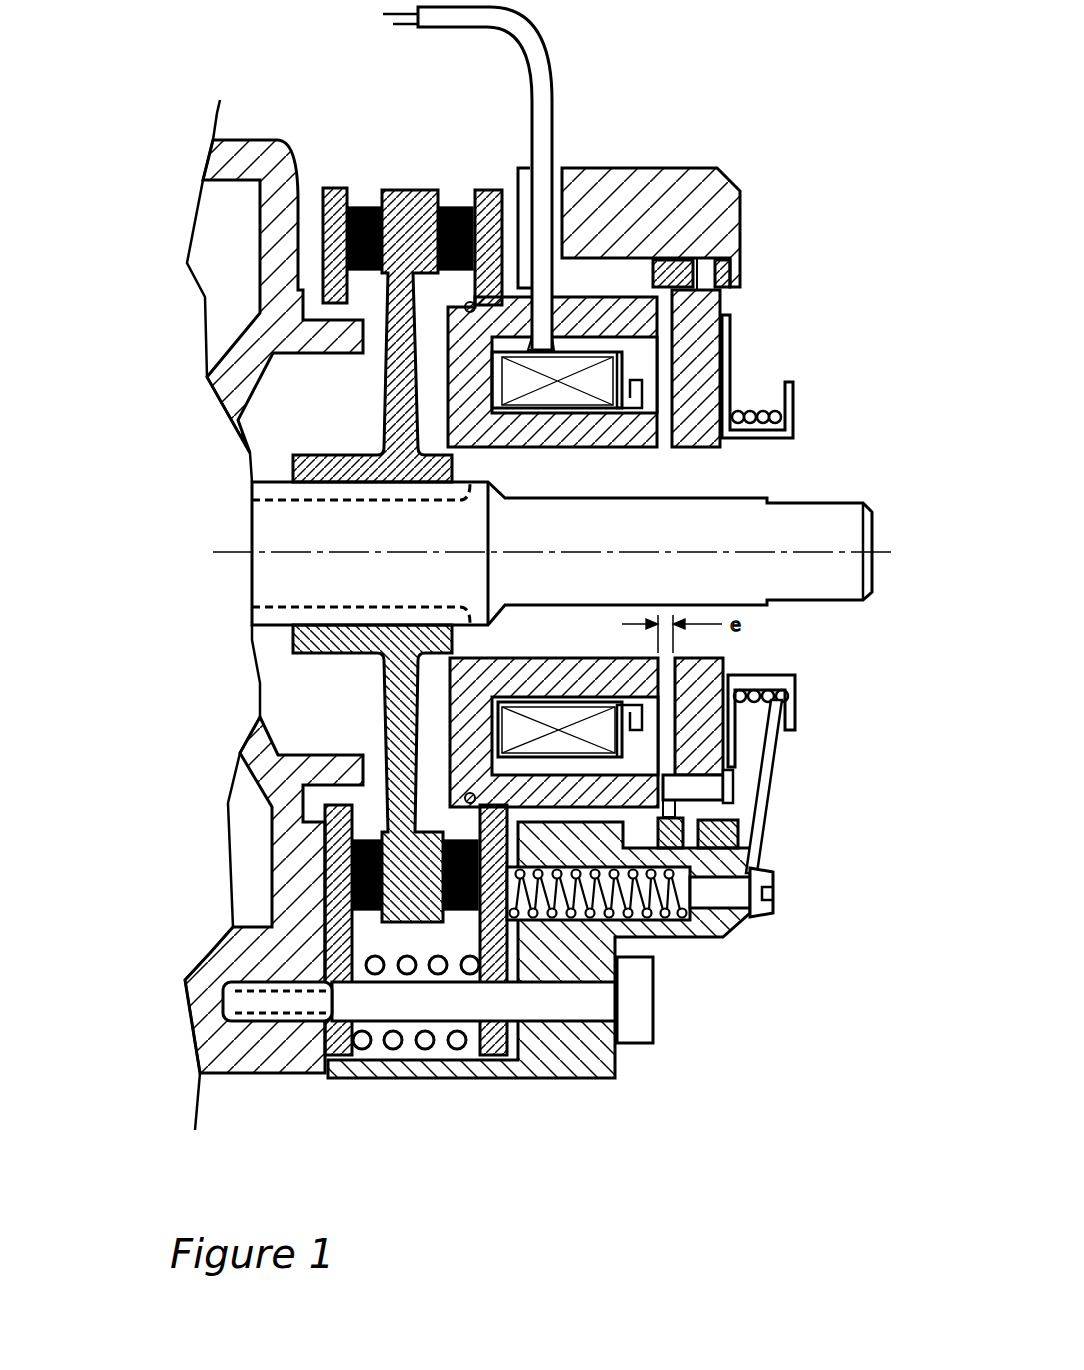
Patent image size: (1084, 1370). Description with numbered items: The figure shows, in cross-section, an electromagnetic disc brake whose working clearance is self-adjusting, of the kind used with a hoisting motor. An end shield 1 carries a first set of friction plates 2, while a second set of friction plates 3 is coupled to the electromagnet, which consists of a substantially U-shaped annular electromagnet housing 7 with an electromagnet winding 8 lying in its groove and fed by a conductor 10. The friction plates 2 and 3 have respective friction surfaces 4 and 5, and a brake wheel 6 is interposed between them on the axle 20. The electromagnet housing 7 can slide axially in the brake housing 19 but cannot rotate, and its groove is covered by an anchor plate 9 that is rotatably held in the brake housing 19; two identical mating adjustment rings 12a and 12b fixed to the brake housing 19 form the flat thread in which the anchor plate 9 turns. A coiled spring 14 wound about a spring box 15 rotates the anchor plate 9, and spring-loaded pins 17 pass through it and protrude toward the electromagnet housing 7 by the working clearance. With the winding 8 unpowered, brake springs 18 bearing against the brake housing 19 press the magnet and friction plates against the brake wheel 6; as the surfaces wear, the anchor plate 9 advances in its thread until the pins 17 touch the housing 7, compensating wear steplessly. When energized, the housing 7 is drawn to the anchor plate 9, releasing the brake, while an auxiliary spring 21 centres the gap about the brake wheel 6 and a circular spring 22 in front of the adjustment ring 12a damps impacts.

The end shield 1 is at (217, 165).
The first set of friction plates 2 is at (334, 192).
The second set of friction plates 3 is at (495, 190).
The friction surface 4 is at (363, 208).
The friction surface 5 is at (460, 198).
The brake wheel 6 is at (390, 693).
The electromagnet housing 7 is at (632, 452).
The electromagnet winding 8 is at (647, 372).
The anchor plate 9 is at (708, 337).
The conductor 10 is at (530, 43).
The adjustment ring 12a is at (718, 247).
The adjustment ring 12b is at (723, 292).
The coiled spring 14 is at (780, 757).
The spring box 15 is at (795, 690).
The pins 17 is at (735, 782).
The brake springs 18 is at (680, 937).
The brake housing 19 is at (655, 170).
The axle 20 is at (830, 515).
The auxiliary spring 21 is at (425, 1048).
The circular spring 22 is at (653, 246).